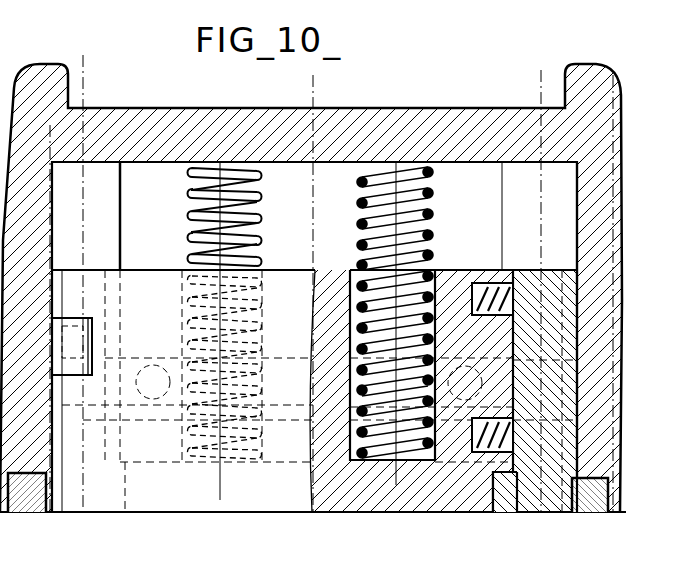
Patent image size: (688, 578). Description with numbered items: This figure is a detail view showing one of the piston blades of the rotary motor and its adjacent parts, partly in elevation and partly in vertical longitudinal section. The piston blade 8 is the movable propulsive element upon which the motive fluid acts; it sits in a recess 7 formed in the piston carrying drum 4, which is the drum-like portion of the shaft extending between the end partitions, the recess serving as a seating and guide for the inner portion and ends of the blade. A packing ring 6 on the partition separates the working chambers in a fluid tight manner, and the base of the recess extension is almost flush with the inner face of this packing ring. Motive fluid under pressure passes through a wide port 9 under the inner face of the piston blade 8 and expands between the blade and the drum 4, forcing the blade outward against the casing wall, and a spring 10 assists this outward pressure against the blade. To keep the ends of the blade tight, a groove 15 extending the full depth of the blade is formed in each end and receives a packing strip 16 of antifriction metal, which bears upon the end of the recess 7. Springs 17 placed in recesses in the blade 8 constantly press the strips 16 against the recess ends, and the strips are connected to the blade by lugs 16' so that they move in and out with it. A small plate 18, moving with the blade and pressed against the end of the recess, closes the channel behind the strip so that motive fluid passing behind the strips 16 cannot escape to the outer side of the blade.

The piston carrying drum 4 is at (462, 120).
The packing ring 6 is at (28, 497).
The recess 7 is at (108, 178).
The piston blade 8 is at (316, 490).
The port 9 is at (324, 293).
The spring 10 is at (255, 224).
The groove 15 is at (585, 384).
The packing strip 16 is at (344, 289).
The lug 16' is at (344, 289).
The spring 17 is at (497, 284).
The small plate 18 is at (78, 332).